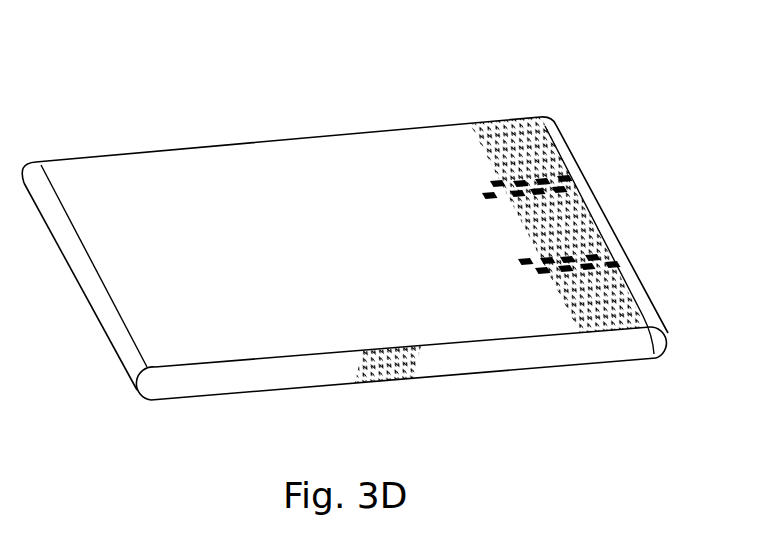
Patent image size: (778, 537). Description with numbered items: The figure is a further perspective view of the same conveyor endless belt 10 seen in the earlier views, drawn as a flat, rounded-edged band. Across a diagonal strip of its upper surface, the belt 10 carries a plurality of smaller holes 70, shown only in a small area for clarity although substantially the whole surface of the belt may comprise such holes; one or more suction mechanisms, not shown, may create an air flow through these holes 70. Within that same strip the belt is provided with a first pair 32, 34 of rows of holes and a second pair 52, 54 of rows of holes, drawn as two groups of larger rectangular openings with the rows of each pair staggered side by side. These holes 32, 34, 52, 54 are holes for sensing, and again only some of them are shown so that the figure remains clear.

The endless belt 10 is at (295, 155).
The smaller holes 70 is at (550, 127).
The row of holes 32 is at (566, 177).
The row of holes 34 is at (562, 190).
The row of holes 52 is at (603, 255).
The row of holes 54 is at (618, 265).